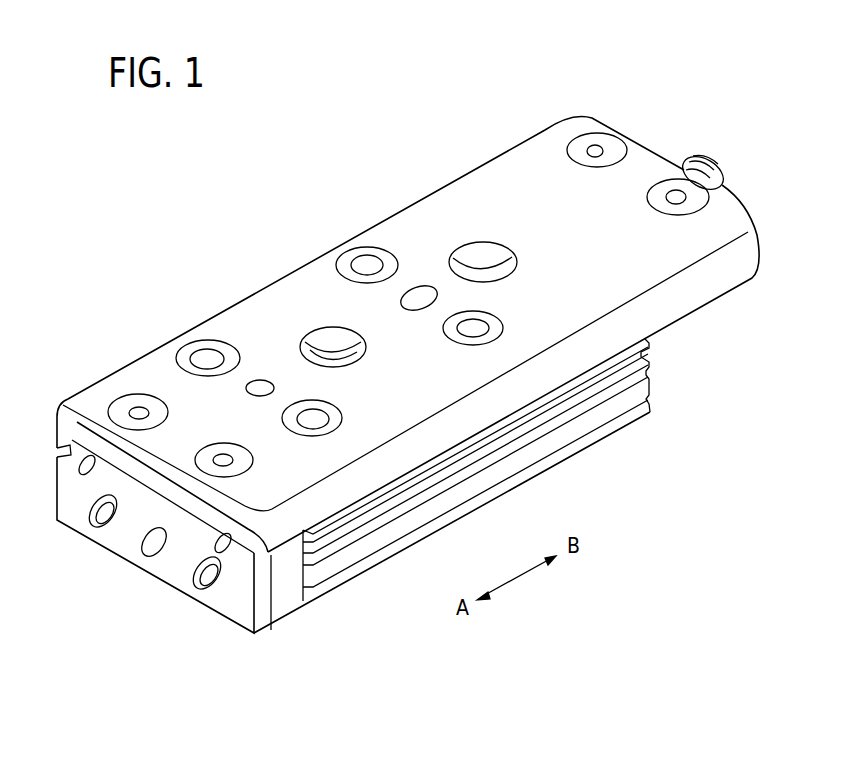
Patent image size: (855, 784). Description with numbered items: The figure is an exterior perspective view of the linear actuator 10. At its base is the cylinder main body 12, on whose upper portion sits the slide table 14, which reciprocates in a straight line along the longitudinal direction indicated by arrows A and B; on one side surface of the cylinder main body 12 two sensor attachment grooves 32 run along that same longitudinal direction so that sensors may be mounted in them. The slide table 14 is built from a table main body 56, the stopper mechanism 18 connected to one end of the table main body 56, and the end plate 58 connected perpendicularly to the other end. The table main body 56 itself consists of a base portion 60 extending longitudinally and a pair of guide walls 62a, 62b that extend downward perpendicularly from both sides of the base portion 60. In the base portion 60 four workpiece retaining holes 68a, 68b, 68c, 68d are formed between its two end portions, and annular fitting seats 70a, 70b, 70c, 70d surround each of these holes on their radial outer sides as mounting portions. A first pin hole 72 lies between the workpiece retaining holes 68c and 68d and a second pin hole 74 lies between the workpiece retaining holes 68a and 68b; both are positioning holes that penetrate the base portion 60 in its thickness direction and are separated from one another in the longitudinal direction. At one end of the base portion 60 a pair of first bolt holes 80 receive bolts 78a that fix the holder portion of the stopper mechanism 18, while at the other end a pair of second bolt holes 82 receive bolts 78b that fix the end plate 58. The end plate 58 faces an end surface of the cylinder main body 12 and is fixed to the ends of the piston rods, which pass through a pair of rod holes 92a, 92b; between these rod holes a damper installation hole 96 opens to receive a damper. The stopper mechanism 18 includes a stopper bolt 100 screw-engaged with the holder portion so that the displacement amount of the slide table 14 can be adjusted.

The linear actuator 10 is at (238, 200).
The cylinder main body 12 is at (648, 430).
The slide table 14 is at (257, 281).
The stopper mechanism 18 is at (716, 146).
The sensor attachment grooves 32 is at (652, 352).
The table main body 56 is at (684, 251).
The end plate 58 is at (181, 581).
The base portion 60 is at (517, 166).
The guide wall 62a is at (56, 434).
The guide wall 62b is at (271, 630).
The workpiece retaining hole 68a is at (353, 246).
The workpiece retaining hole 68b is at (480, 322).
The workpiece retaining hole 68c is at (190, 347).
The workpiece retaining hole 68d is at (324, 411).
The fitting seat 70a is at (360, 263).
The fitting seat 70b is at (477, 337).
The fitting seat 70c is at (221, 356).
The fitting seat 70d is at (314, 431).
The first pin hole 72 is at (266, 387).
The second pin hole 74 is at (421, 295).
The bolts 78a is at (658, 178).
The bolts 78b is at (140, 394).
The first bolt holes 80 is at (598, 143).
The second bolt holes 82 is at (158, 418).
The rod hole 92a is at (101, 527).
The rod hole 92b is at (204, 588).
The damper installation hole 96 is at (152, 556).
The stopper bolt 100 is at (724, 170).